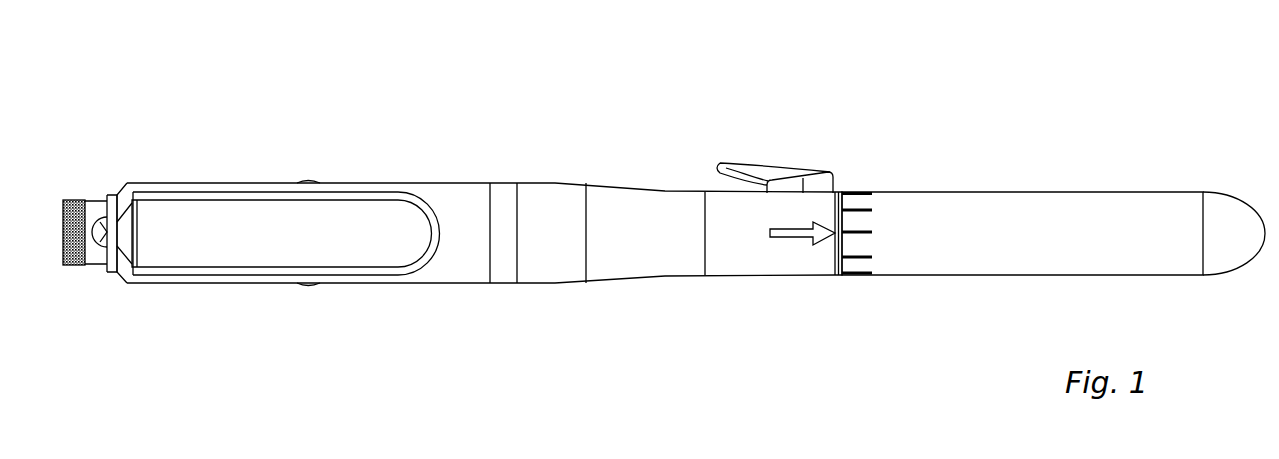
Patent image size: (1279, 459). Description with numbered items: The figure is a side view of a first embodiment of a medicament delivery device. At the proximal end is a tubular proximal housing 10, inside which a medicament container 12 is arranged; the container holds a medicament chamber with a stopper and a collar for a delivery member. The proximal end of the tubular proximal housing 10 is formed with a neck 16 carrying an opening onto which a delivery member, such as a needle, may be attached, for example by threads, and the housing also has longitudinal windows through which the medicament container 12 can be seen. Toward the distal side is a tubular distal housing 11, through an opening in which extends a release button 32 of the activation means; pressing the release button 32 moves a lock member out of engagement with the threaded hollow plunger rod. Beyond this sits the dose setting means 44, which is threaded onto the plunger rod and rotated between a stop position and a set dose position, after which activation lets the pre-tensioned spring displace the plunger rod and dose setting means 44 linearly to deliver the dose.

The tubular proximal housing 10 is at (468, 203).
The tubular distal housing 11 is at (633, 260).
The medicament container 12 is at (251, 252).
The neck 16 is at (73, 203).
The release button 32 is at (793, 182).
The dose setting means 44 is at (1009, 252).